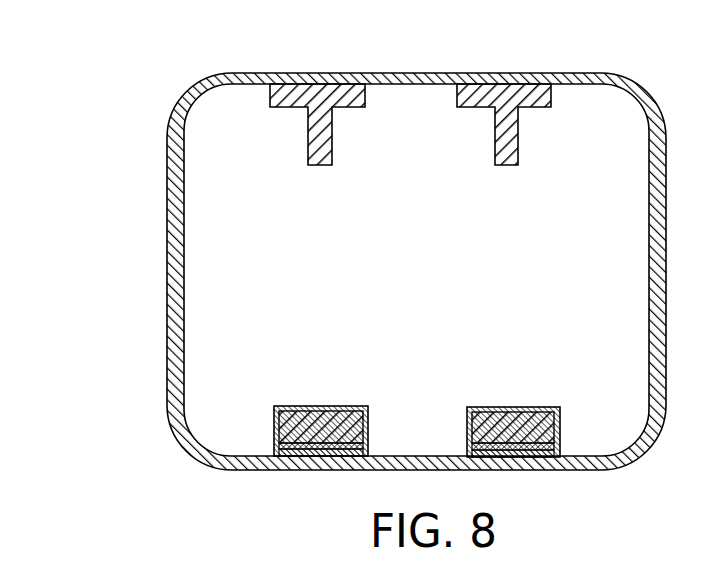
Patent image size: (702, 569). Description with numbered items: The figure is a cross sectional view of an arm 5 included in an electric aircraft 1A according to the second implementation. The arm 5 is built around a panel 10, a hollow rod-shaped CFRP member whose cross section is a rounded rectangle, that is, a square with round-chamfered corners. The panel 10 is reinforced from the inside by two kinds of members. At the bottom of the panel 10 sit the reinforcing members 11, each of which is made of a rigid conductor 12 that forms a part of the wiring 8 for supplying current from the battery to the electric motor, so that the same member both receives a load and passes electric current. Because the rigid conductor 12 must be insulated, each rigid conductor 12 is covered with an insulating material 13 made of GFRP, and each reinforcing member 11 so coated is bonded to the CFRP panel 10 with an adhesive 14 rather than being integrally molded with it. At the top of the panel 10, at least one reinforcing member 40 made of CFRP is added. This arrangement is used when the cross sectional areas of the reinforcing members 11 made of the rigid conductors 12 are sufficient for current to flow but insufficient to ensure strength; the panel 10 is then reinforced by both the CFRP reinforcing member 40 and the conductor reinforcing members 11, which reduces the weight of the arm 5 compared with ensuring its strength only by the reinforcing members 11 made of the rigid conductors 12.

The electric aircraft 1A is at (113, 126).
The arm 5 is at (558, 66).
The panel 10 is at (342, 73).
The reinforcing member 40 is at (505, 165).
The reinforcing member 11 is at (350, 406).
The wiring 8 is at (512, 398).
The insulating material 13 is at (498, 407).
The adhesive 14 is at (467, 452).
The rigid conductor 12 is at (553, 445).